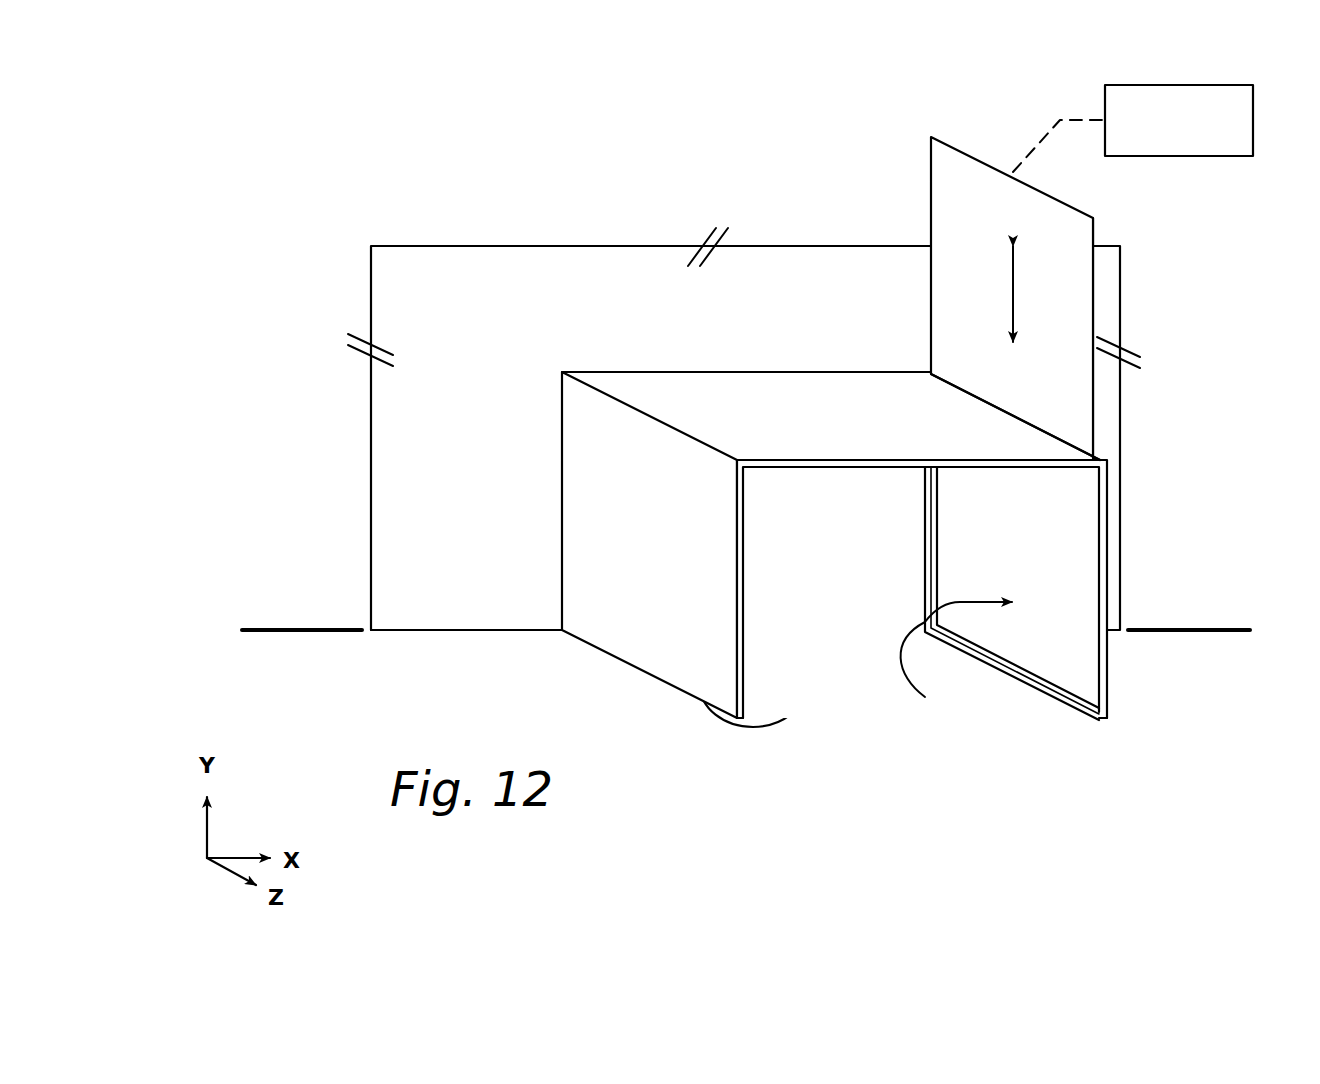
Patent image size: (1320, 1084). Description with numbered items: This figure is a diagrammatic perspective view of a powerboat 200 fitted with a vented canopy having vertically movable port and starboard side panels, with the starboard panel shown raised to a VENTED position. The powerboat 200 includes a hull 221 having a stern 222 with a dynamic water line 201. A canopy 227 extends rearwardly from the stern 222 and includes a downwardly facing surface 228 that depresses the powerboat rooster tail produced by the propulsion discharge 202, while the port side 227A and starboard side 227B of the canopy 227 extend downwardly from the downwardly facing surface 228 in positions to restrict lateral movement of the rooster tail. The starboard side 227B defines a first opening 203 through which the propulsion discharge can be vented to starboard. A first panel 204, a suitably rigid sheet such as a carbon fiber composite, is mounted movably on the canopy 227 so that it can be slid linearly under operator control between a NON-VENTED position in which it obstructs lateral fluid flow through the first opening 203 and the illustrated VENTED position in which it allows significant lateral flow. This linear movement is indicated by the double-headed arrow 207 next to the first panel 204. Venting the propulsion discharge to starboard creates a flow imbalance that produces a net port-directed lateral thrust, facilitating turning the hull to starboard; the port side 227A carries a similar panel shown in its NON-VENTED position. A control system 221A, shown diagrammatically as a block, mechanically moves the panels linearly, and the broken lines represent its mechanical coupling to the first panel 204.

The powerboat 200 is at (346, 186).
The dynamic water line 201 is at (1175, 632).
The propulsion discharge 202 is at (795, 713).
The first opening 203 is at (956, 658).
The first panel 204 is at (943, 172).
The double-headed arrow 207 is at (1010, 291).
The hull 221 is at (368, 399).
The control system 221A is at (1213, 157).
The stern 222 is at (1110, 257).
The canopy 227 is at (611, 387).
The port side 227A is at (687, 683).
The starboard side 227B is at (1110, 708).
The downwardly facing surface 228 is at (797, 462).